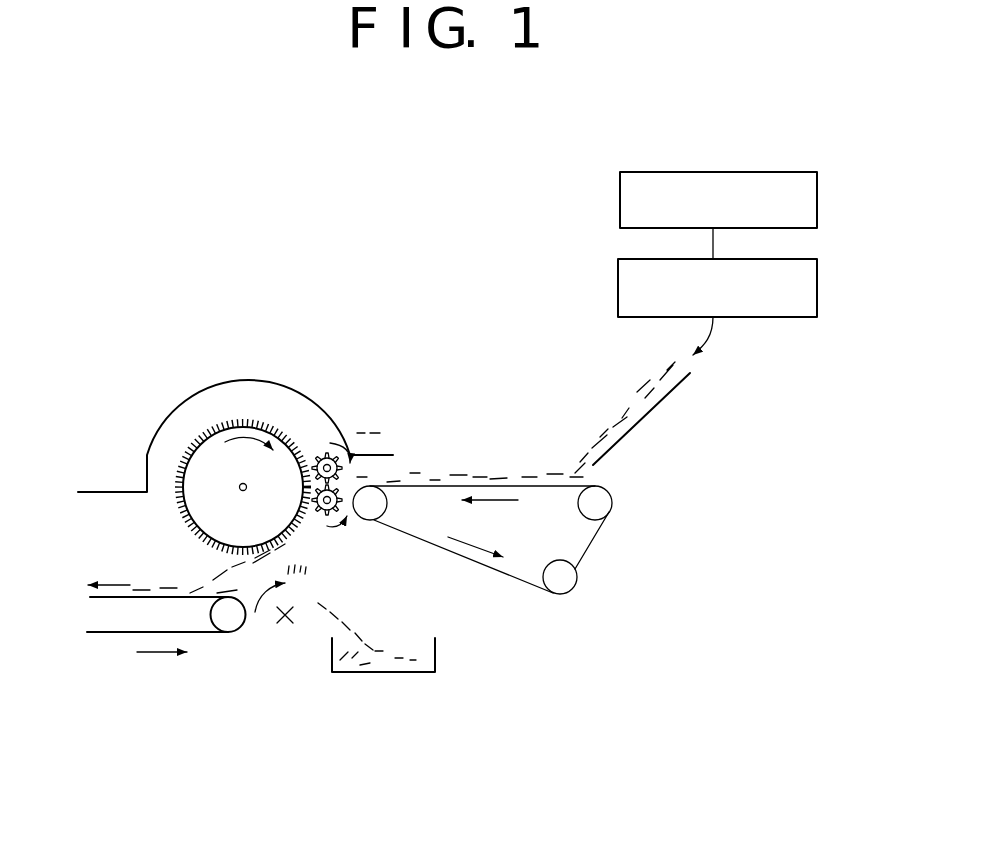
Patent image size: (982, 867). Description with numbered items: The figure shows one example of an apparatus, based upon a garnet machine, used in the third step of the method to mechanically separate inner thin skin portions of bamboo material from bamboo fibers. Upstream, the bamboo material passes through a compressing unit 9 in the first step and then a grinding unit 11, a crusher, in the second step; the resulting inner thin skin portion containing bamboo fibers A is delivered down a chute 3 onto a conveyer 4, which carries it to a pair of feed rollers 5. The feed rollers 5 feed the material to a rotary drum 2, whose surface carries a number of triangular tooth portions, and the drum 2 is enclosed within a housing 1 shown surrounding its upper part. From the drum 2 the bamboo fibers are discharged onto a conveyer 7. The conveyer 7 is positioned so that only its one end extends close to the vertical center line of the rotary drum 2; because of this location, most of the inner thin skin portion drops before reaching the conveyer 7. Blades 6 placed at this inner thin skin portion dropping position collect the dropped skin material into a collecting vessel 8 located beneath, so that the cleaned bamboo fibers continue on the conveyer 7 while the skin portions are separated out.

The housing 1 is at (155, 443).
The rotary drum 2 is at (222, 402).
The chute 3 is at (677, 390).
The conveyer 4 is at (608, 490).
The pair of feed rollers 5 is at (323, 456).
The blades 6 is at (280, 624).
The conveyer 7 is at (183, 598).
The collecting vessel 8 is at (382, 673).
The compressing unit 9 is at (818, 202).
The grinding unit 11 is at (818, 286).
The bamboo fibers A is at (510, 480).